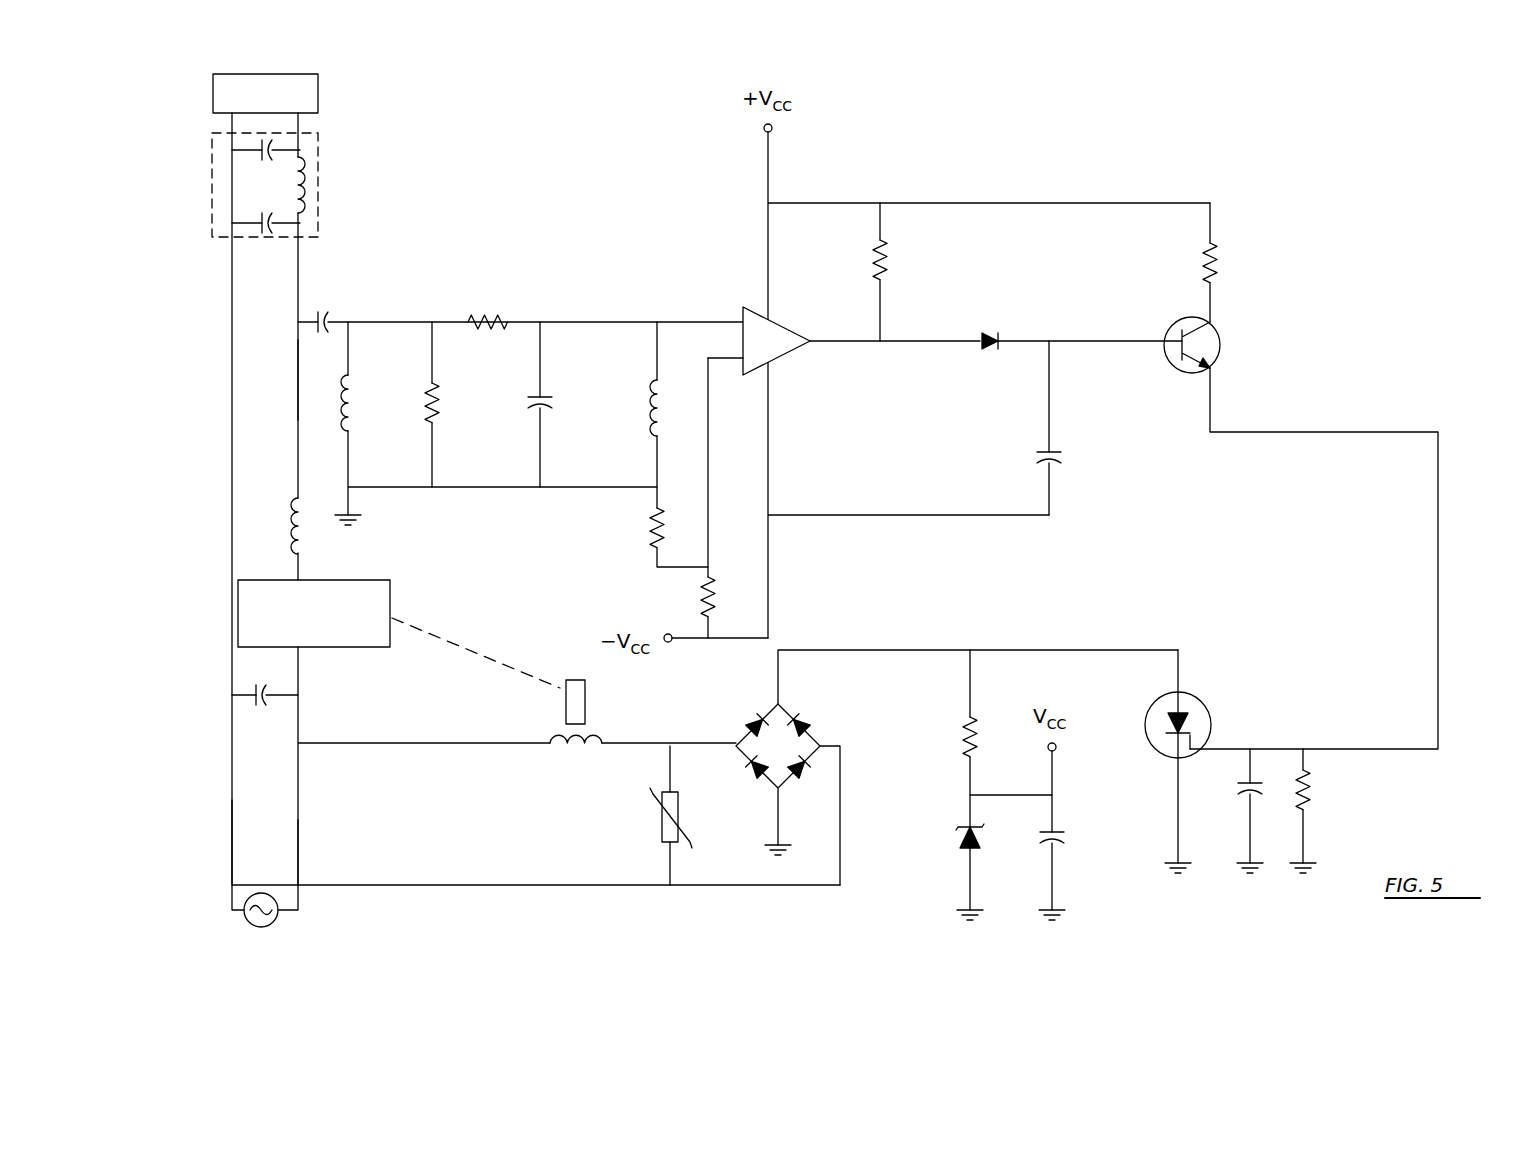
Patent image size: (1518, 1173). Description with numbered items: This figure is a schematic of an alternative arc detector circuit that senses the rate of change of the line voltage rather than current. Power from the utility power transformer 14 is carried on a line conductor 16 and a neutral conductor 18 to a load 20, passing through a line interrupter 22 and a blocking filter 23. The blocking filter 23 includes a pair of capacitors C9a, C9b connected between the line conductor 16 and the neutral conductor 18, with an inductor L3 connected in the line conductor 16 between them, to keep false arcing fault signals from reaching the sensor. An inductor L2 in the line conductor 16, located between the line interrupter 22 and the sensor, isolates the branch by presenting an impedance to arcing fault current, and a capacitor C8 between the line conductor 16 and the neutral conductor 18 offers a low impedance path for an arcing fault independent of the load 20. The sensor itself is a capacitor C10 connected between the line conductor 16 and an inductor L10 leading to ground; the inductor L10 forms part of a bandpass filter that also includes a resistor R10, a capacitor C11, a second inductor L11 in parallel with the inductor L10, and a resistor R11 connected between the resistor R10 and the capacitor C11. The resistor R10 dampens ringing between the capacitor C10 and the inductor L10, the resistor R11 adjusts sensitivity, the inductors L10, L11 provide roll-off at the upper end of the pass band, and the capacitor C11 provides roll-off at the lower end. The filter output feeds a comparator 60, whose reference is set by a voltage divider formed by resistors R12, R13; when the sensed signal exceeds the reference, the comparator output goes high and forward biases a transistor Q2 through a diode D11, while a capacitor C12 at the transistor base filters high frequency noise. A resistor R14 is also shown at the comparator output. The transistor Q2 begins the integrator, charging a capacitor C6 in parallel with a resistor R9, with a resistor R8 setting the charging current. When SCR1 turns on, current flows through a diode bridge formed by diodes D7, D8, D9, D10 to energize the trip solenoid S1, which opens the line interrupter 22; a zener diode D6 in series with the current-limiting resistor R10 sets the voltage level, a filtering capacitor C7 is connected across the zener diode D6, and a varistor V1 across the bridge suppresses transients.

The power transformer 14 is at (278, 916).
The line conductor 16 is at (298, 397).
The neutral conductor 18 is at (232, 845).
The load 20 is at (318, 95).
The line interrupter 22 is at (378, 580).
The blocking filter 23 is at (212, 160).
The comparator 60 is at (775, 358).
The inductor L3 is at (308, 182).
The capacitor C9a is at (262, 232).
The capacitor C9b is at (270, 158).
The capacitor C10 is at (330, 320).
The inductor L10 is at (348, 388).
The resistor R11 is at (478, 322).
The resistor R10 is at (440, 410).
The capacitor C11 is at (552, 400).
The second inductor L11 is at (657, 420).
The resistor R12 is at (652, 515).
The resistor R13 is at (698, 618).
The resistor R14 is at (870, 262).
The diode D11 is at (995, 333).
The capacitor C12 is at (1040, 462).
The resistor R8 is at (1202, 268).
The transistor Q2 is at (1218, 345).
The inductor L2 is at (298, 520).
The capacitor C8 is at (268, 705).
The trip solenoid S1 is at (575, 748).
The varistor V1 is at (664, 818).
The diode D10 is at (748, 718).
The diode D7 is at (808, 718).
The diode D9 is at (749, 776).
The diode D8 is at (806, 776).
The zener diode D6 is at (958, 838).
The filtering capacitor C7 is at (1062, 840).
The SCR SCR1 is at (1207, 705).
The capacitor C6 is at (1240, 790).
The resistor R9 is at (1312, 775).